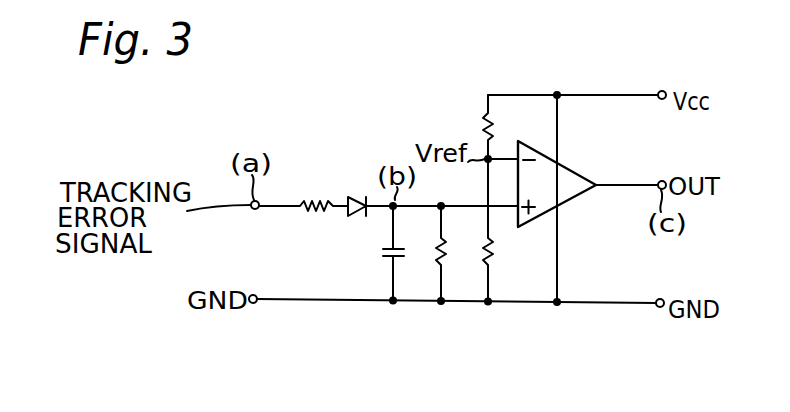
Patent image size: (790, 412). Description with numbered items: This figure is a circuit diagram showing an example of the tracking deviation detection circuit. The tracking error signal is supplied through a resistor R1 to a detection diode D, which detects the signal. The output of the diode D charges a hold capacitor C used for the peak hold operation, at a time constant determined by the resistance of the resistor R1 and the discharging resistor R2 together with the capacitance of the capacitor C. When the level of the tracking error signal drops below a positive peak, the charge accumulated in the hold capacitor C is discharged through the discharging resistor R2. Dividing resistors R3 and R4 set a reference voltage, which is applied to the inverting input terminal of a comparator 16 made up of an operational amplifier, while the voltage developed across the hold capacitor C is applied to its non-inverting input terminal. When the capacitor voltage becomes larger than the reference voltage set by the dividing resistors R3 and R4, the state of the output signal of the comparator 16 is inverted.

The comparator 16 is at (567, 163).
The resistor R1 is at (309, 198).
The discharging resistor R2 is at (437, 250).
The dividing resistor R3 is at (482, 123).
The dividing resistor R4 is at (483, 252).
The detection diode D is at (352, 195).
The hold capacitor C is at (382, 252).